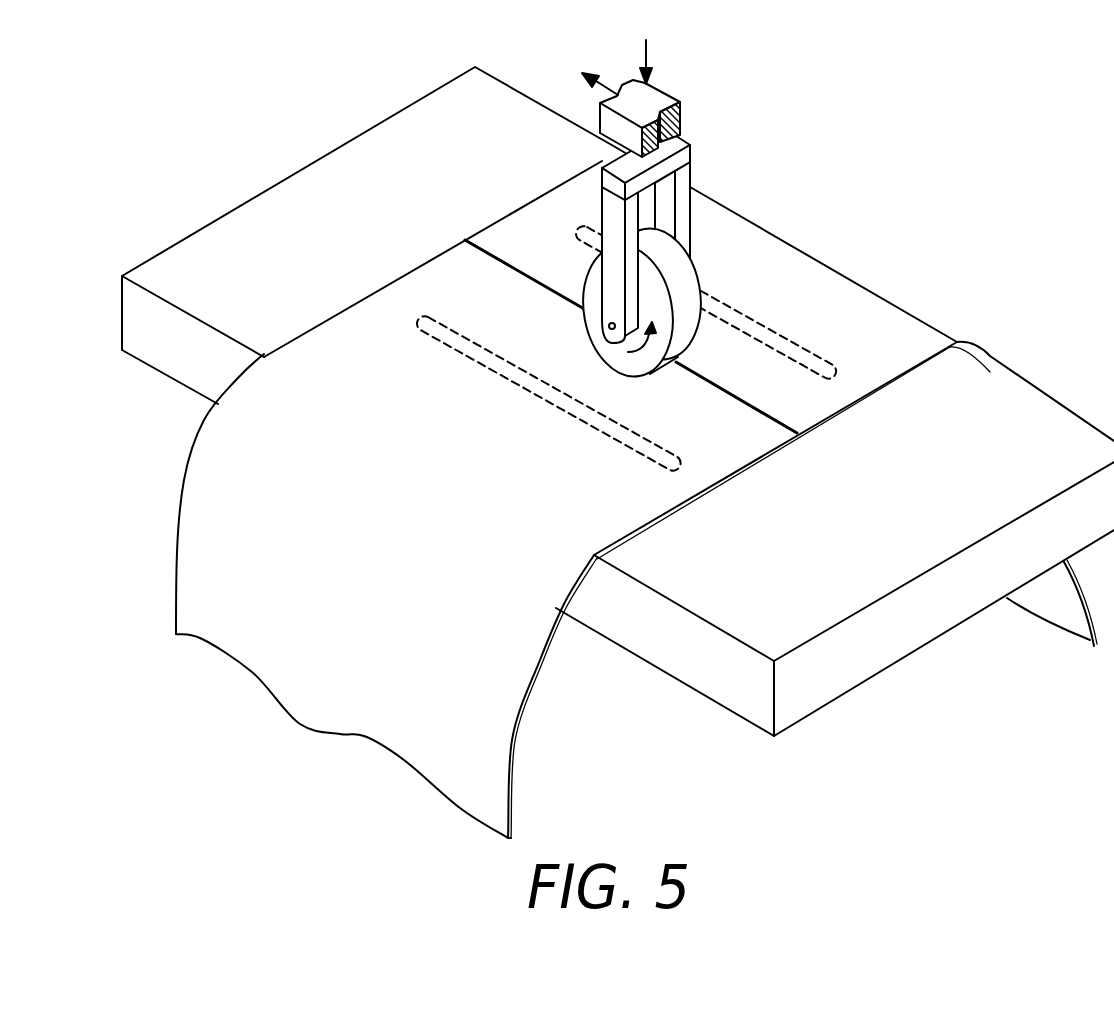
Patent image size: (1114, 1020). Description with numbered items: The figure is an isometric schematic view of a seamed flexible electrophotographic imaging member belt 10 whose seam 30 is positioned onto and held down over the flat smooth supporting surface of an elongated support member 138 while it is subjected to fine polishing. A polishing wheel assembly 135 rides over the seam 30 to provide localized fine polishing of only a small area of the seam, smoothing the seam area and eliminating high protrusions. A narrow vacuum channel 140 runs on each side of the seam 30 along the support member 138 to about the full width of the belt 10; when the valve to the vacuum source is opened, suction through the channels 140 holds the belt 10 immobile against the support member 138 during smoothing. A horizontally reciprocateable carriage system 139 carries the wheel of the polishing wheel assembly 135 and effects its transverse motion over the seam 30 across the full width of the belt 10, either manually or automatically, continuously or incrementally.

The imaging member belt 10 is at (153, 562).
The seam 30 is at (737, 404).
The polishing wheel assembly 135 is at (770, 274).
The support member 138 is at (828, 550).
The horizontally reciprocateable carriage system 139 is at (684, 108).
The vacuum channel 140 is at (500, 350).